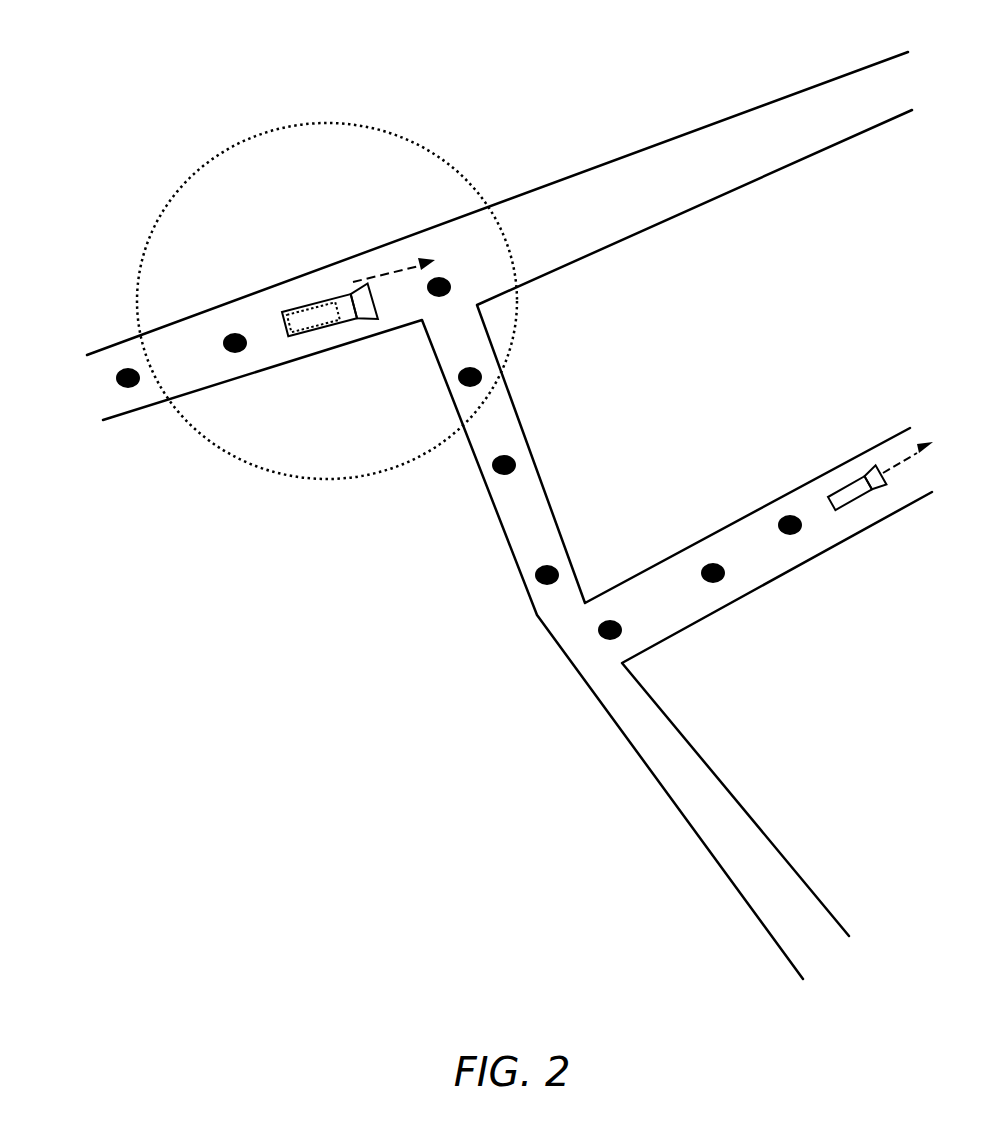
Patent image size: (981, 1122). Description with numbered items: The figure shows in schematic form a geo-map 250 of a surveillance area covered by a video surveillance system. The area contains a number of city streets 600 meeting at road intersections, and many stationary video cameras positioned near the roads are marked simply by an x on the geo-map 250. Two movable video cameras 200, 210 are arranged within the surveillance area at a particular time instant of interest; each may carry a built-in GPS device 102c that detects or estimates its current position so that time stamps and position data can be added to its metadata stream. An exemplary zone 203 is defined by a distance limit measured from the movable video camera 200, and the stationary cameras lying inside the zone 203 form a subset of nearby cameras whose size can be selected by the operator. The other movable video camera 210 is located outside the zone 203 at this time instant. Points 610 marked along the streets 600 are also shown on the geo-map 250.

The city streets 600 is at (597, 237).
The GPS location points 610 is at (120, 372).
The movable video camera 200 is at (343, 295).
The built-in GPS device 102c is at (282, 320).
The zone 203 is at (220, 450).
The movable video camera 210 is at (837, 493).
The geo-map 250 is at (434, 730).